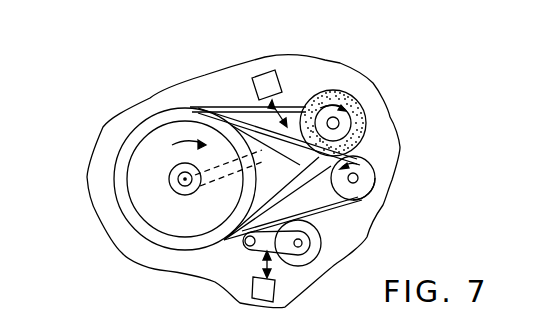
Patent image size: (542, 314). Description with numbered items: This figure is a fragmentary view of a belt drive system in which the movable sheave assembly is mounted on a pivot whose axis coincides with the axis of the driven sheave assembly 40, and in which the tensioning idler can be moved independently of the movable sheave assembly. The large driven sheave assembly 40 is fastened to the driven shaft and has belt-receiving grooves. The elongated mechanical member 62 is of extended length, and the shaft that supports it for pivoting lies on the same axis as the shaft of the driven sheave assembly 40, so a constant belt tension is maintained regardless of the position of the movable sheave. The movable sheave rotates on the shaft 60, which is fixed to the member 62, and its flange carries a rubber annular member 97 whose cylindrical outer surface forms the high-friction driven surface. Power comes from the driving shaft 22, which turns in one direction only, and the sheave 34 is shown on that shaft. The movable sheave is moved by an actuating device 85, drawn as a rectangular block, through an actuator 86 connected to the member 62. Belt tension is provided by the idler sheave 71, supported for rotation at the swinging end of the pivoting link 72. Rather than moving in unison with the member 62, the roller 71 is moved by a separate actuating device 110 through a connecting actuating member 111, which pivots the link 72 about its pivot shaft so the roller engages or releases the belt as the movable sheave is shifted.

The driven sheave assembly 40 is at (118, 206).
The elongated mechanical member 62 is at (240, 110).
The actuator 86 is at (253, 110).
The actuating device 85 is at (266, 72).
The annular member 97 is at (328, 92).
The shaft 60 is at (340, 122).
The driving shaft 22 is at (358, 177).
The pulley 34 is at (368, 185).
The idler sheave 71 is at (320, 242).
The elongated member 72 is at (262, 240).
The actuating device 110 is at (252, 285).
The actuating member 111 is at (359, 303).